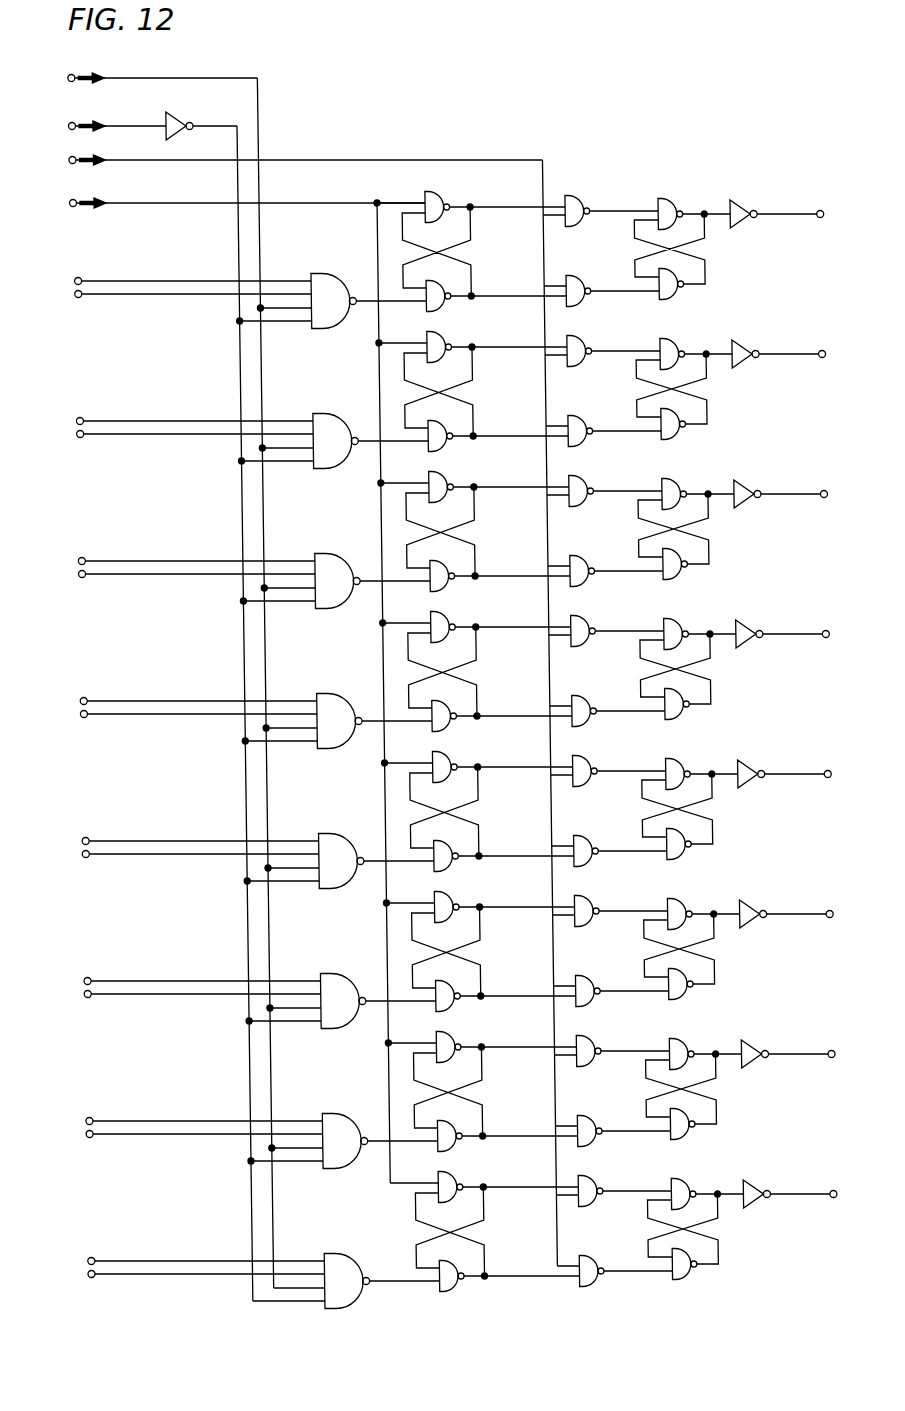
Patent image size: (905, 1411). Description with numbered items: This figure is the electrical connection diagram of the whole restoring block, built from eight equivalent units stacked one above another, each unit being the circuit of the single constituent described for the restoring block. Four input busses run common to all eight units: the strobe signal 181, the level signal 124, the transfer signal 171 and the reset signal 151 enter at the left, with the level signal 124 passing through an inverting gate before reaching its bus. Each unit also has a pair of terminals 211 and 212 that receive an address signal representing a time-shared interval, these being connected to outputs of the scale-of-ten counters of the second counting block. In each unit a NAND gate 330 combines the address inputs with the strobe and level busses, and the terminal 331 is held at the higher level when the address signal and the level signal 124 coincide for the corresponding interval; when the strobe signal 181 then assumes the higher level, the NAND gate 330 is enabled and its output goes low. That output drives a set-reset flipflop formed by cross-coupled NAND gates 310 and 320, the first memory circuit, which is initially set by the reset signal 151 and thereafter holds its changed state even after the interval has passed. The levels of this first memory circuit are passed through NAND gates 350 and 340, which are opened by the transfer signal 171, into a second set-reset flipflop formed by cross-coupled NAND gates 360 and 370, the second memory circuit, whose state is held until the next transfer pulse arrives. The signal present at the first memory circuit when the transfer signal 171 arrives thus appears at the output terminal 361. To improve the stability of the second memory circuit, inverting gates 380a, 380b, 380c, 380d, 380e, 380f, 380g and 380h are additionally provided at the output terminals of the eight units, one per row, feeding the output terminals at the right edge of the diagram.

The strobe signal 181 is at (142, 78).
The level signal 124 is at (132, 126).
The transfer signal 171 is at (285, 162).
The reset signal 151 is at (227, 204).
The terminal 211 is at (72, 278).
The terminal 212 is at (73, 296).
The terminal 331 is at (216, 106).
The NAND gate 330 is at (314, 270).
The NAND gate 310 is at (433, 196).
The NAND gate 320 is at (444, 306).
The NAND gate 350 is at (567, 200).
The NAND gate 340 is at (570, 307).
The NAND gate 360 is at (662, 200).
The NAND gate 370 is at (663, 307).
The output terminal 361 is at (733, 199).
The inverting gate 380a is at (733, 228).
The inverting gate 380b is at (733, 368).
The inverting gate 380c is at (733, 508).
The inverting gate 380d is at (733, 648).
The inverting gate 380e is at (733, 788).
The inverting gate 380f is at (733, 928).
The inverting gate 380g is at (733, 1068).
The inverting gate 380h is at (733, 1208).